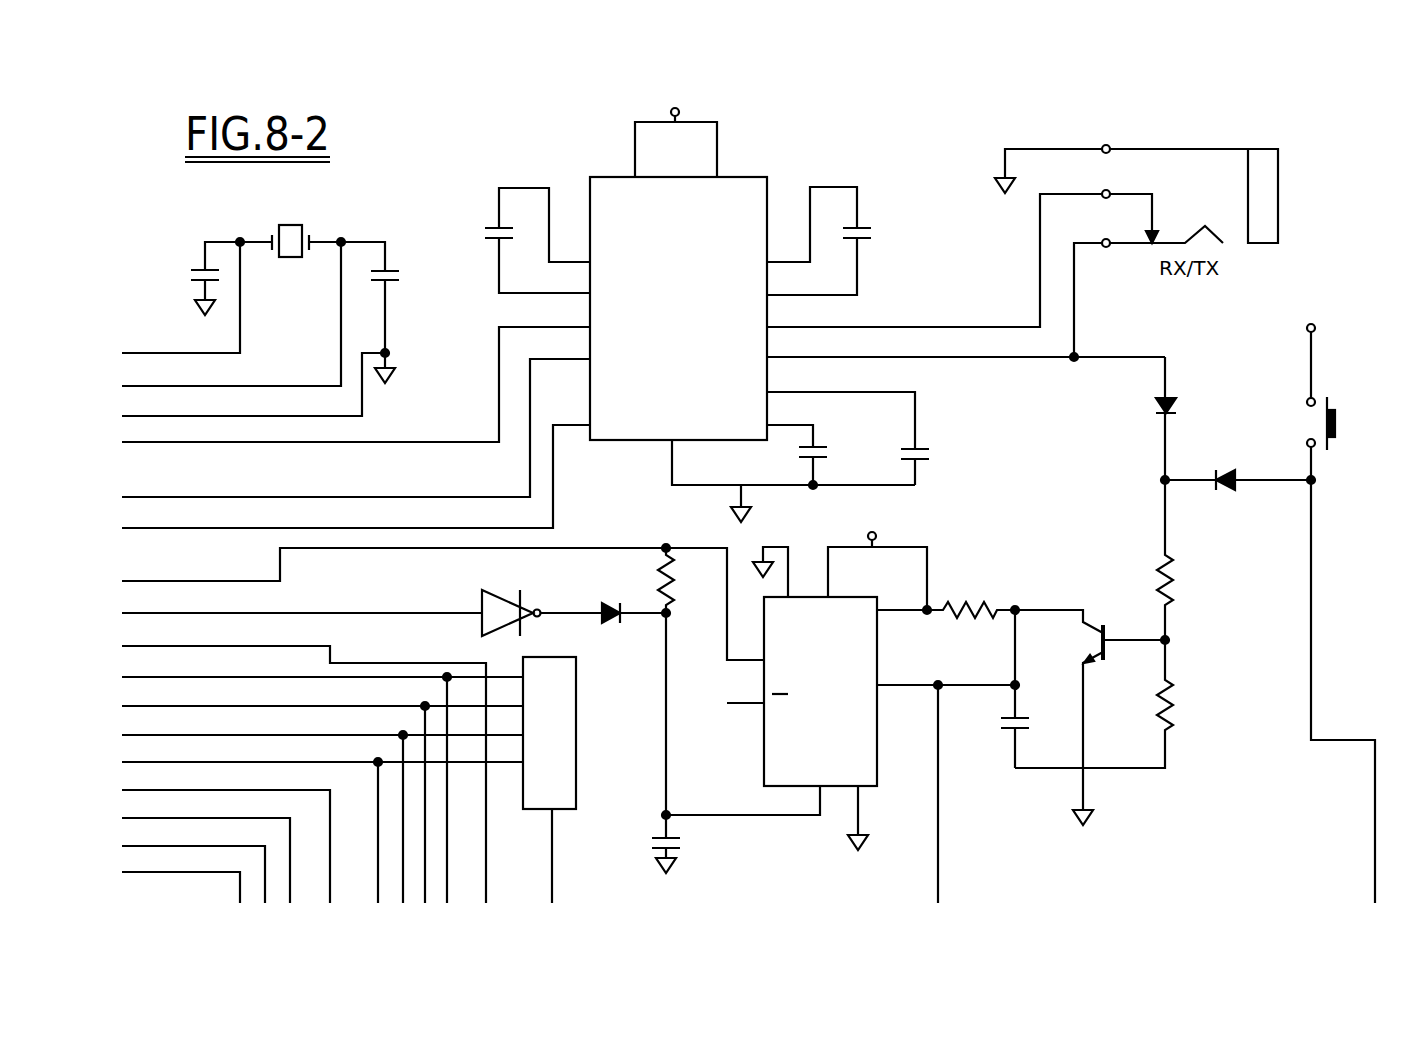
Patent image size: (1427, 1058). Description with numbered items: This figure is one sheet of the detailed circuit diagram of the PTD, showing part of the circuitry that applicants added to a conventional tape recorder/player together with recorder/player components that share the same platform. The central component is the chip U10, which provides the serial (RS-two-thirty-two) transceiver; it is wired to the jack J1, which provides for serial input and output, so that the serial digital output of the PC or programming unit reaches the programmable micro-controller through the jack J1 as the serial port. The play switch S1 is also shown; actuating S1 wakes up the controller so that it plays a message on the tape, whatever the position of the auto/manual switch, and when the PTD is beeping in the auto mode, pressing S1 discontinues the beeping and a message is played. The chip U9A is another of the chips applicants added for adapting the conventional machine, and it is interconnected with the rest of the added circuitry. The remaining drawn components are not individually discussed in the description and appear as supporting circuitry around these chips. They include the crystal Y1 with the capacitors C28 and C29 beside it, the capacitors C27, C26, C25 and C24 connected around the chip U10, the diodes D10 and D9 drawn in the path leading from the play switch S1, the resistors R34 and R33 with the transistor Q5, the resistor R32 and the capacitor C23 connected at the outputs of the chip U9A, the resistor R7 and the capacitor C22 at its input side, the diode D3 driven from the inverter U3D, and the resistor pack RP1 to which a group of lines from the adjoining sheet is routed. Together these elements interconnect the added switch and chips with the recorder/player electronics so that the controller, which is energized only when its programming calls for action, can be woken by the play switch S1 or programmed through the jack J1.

The capacitor C28 is at (197, 278).
The crystal Y1 is at (291, 228).
The capacitor C29 is at (390, 297).
The chip U10 is at (679, 277).
The capacitor C27 is at (521, 240).
The capacitor C26 is at (838, 241).
The capacitor C25 is at (834, 458).
The capacitor C24 is at (937, 464).
The jack J1 is at (1136, 238).
The play switch S1 is at (1335, 385).
The diode D9 is at (1238, 496).
The diode D10 is at (1144, 418).
The resistor R34 is at (1186, 560).
The resistor R33 is at (1115, 704).
The transistor Q5 is at (1090, 717).
The resistor R32 is at (971, 598).
The capacitor C23 is at (992, 689).
The chip U9A is at (796, 675).
The resistor R7 is at (680, 580).
The capacitor C22 is at (687, 844).
The diode D3 is at (603, 597).
The inverter U3D is at (491, 604).
The resistor pack RP1 is at (539, 766).